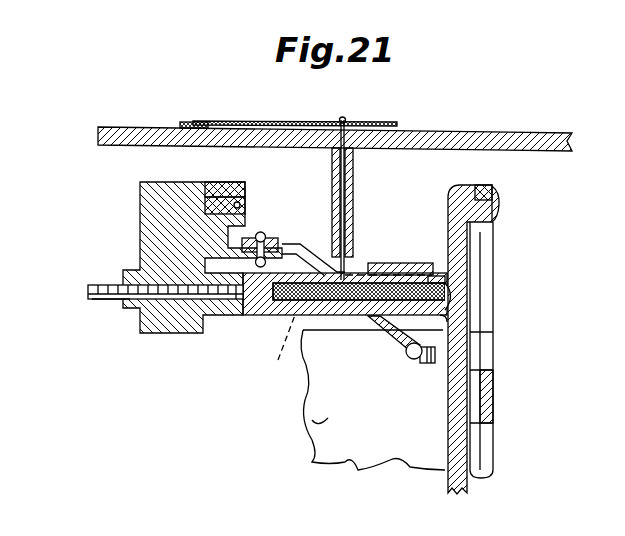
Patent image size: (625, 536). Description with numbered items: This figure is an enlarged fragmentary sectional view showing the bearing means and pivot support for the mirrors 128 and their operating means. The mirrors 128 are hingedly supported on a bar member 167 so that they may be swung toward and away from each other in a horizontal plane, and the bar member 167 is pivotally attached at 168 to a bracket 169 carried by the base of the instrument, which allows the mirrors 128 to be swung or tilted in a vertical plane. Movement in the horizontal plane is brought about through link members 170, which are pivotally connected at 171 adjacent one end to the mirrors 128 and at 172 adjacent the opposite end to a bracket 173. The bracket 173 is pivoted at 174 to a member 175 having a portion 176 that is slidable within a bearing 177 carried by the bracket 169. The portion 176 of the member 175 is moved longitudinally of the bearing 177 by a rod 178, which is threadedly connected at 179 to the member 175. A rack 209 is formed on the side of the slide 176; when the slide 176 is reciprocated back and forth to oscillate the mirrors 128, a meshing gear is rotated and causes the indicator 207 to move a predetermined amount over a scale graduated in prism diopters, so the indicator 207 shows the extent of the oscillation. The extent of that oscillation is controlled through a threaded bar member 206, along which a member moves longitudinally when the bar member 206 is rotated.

The mirrors 128 is at (318, 428).
The bar member 167 is at (487, 294).
The pivot 168 is at (500, 204).
The bracket 169 is at (448, 203).
The link members 170 is at (325, 248).
The pivot 171 is at (408, 348).
The pivot 172 is at (262, 238).
The bracket 173 is at (212, 183).
The pivot 174 is at (243, 206).
The member 175 is at (150, 232).
The slidable portion 176 is at (273, 312).
The bearing 177 is at (394, 263).
The rod 178 is at (92, 291).
The threaded connection 179 is at (98, 303).
The threaded bar member 206 is at (186, 122).
The indicator 207 is at (286, 121).
The rack 209 is at (278, 347).